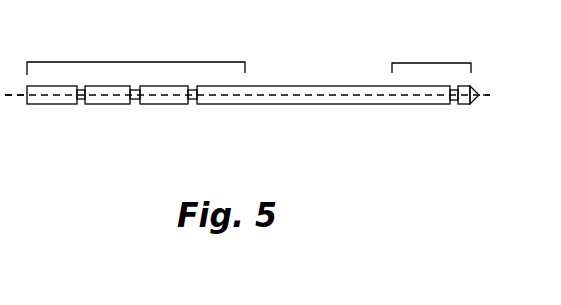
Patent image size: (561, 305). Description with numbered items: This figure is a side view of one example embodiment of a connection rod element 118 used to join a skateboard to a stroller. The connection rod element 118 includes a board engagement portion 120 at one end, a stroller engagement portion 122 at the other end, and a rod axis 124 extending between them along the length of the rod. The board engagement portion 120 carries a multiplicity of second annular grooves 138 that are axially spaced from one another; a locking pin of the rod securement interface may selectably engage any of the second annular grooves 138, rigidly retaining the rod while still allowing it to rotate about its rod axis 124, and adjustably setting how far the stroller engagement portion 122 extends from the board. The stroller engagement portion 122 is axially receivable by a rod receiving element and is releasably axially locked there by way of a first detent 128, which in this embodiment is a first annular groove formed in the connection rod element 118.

The connection rod element 118 is at (323, 104).
The board engagement portion 120 is at (130, 62).
The stroller engagement portion 122 is at (430, 63).
The rod axis 124 is at (13, 96).
The first detent 128 is at (457, 104).
The second annular grooves 138 is at (82, 104).